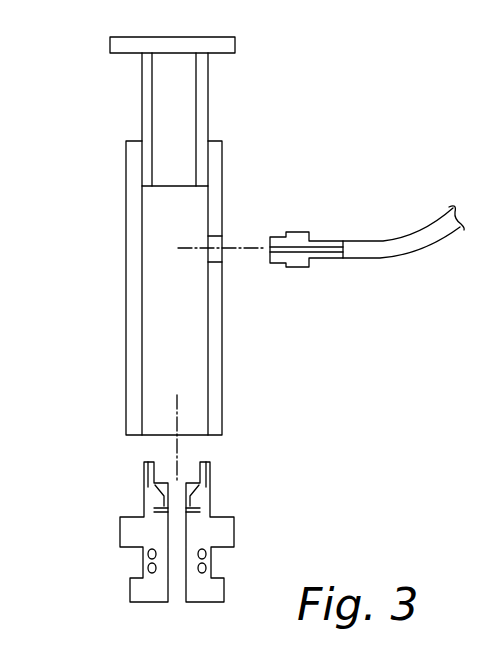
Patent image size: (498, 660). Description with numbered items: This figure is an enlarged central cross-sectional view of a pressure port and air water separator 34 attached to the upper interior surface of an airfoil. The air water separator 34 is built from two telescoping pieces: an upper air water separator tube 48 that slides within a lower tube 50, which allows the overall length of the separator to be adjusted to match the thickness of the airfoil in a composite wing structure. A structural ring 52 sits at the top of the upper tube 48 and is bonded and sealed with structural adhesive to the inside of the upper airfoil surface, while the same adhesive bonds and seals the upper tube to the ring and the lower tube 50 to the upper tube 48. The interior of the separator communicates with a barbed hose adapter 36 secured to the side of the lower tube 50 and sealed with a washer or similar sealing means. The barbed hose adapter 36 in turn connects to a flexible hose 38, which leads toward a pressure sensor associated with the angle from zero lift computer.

The air water separator 34 is at (112, 237).
The barbed hose adapter 36 is at (293, 230).
The flexible hose 38 is at (395, 249).
The upper air water separator tube 48 is at (207, 103).
The lower tube 50 is at (222, 362).
The structural ring 52 is at (125, 55).